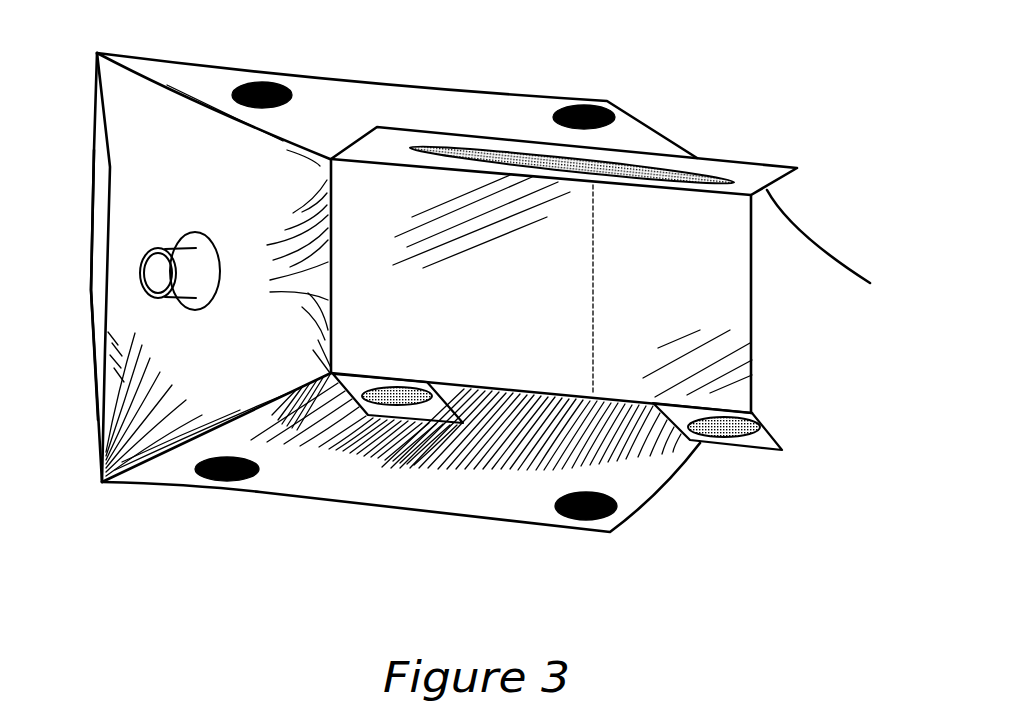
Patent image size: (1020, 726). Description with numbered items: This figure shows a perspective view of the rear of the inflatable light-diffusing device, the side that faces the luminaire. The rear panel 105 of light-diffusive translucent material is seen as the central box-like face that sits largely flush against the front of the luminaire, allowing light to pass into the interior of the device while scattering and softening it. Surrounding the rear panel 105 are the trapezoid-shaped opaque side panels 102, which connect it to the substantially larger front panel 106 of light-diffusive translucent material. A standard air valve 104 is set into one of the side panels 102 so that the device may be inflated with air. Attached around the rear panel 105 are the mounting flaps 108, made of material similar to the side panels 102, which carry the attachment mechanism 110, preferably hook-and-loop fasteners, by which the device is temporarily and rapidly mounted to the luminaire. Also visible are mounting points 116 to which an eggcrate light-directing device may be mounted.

The opaque side panel 102 is at (632, 493).
The standard air valve 104 is at (170, 297).
The rear panel of light-diffusive translucent material 105 is at (707, 277).
The front panel of light-diffusive translucent material 106 is at (92, 293).
The flaps 108 is at (846, 257).
The attachment mechanism 110 is at (723, 173).
The mounting point 116 is at (585, 102).